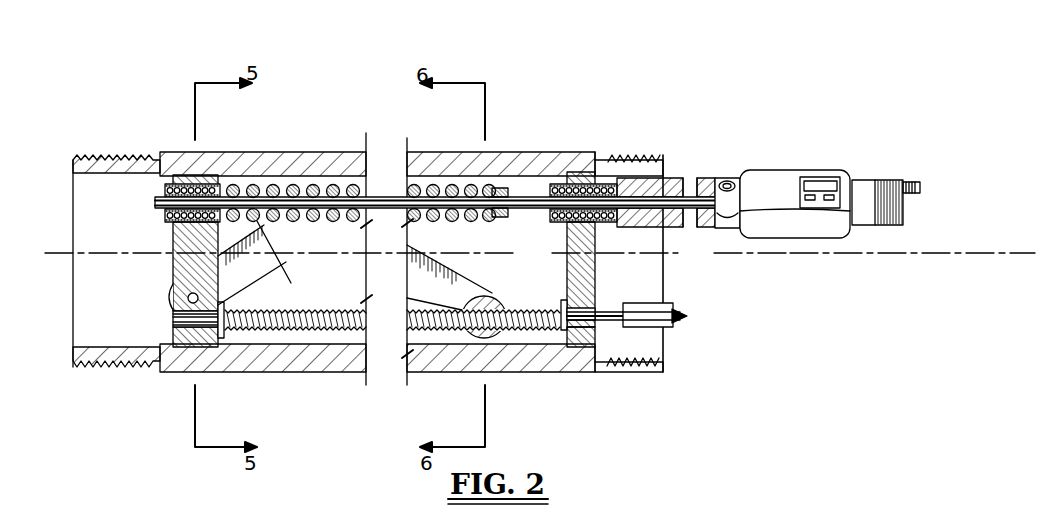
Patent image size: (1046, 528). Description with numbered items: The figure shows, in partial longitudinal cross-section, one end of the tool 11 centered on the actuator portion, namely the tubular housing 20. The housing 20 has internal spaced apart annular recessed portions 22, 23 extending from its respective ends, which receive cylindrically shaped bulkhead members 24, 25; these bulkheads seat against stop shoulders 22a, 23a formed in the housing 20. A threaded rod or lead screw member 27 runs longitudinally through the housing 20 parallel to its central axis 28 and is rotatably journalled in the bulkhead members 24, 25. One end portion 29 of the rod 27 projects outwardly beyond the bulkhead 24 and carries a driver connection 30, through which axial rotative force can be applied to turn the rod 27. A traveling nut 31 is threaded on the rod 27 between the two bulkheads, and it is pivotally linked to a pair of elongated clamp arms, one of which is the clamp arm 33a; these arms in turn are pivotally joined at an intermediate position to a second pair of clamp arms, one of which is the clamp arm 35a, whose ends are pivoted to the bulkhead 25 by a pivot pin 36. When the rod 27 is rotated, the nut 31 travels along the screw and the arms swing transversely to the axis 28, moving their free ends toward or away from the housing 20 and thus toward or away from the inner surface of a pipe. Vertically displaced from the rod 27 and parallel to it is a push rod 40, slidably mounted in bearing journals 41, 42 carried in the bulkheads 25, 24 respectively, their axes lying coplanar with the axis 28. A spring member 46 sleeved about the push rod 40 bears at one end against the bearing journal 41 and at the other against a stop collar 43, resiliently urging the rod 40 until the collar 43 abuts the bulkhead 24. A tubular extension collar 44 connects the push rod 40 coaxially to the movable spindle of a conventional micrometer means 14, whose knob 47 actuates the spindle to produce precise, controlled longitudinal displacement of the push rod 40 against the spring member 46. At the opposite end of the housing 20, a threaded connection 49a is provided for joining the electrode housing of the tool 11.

The tool 11 is at (534, 78).
The micrometer means 14 is at (828, 229).
The tubular housing 20 is at (185, 150).
The annular recessed portion 22 is at (599, 350).
The stop shoulder 22a is at (580, 352).
The annular recessed portion 23 is at (188, 348).
The stop shoulder 23a is at (205, 348).
The bulkhead member 24 is at (540, 259).
The bulkhead member 25 is at (205, 243).
The threaded rod or lead screw member 27 is at (276, 330).
The central axis 28 is at (758, 256).
The end portion 29 is at (612, 310).
The driver connection 30 is at (674, 332).
The traveling nut 31 is at (497, 298).
The clamp arm 33a is at (446, 286).
The clamp arm 35a is at (282, 255).
The pivot pin 36 is at (190, 298).
The push rod 40 is at (325, 186).
The bearing journal 41 is at (221, 183).
The bearing journal 42 is at (579, 182).
The stop collar 43 is at (493, 221).
The tubular extension collar 44 is at (674, 195).
The spring member 46 is at (338, 186).
The knob 47 is at (867, 187).
The threaded connection 49a is at (125, 157).